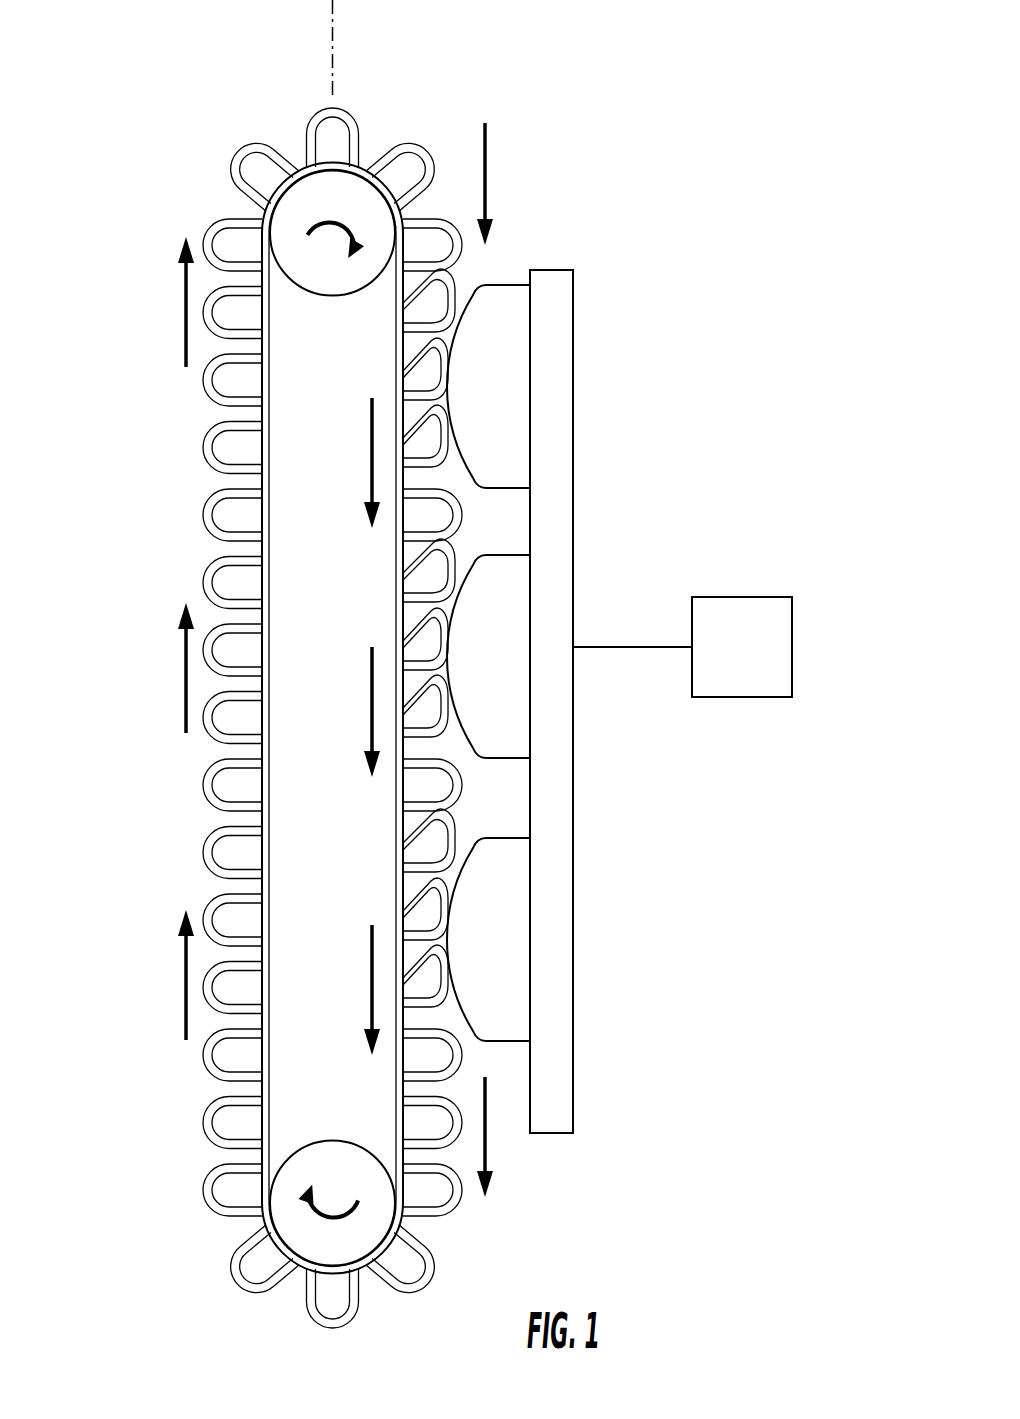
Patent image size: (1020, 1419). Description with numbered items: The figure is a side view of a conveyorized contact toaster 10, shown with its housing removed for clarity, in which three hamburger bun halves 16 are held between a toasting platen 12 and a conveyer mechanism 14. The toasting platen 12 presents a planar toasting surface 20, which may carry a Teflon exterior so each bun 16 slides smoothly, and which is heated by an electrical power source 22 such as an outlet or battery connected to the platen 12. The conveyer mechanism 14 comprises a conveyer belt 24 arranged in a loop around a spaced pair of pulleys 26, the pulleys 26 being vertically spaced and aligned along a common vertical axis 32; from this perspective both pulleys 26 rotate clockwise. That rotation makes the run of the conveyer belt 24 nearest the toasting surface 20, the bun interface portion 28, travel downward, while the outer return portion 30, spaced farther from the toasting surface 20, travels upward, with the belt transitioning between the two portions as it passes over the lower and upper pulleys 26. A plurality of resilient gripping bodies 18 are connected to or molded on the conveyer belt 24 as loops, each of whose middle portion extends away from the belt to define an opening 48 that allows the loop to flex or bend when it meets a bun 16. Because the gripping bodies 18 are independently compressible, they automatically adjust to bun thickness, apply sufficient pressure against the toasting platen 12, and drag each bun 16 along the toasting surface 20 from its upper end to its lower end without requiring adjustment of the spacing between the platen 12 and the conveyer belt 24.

The conveyorized contact toaster 10 is at (150, 58).
The toasting platen 12 is at (610, 370).
The conveyer mechanism 14 is at (285, 125).
The hamburger bun halves 16 is at (505, 283).
The resilient gripping bodies 18 is at (347, 110).
The planar toasting surface 20 is at (530, 1073).
The electrical power source 22 is at (745, 597).
The conveyer belt 24 is at (255, 887).
The pulleys 26 is at (283, 229).
The bun interface portion 28 is at (397, 612).
The return portion 30 is at (267, 788).
The common vertical axis 32 is at (355, 0).
The opening 48 is at (406, 165).